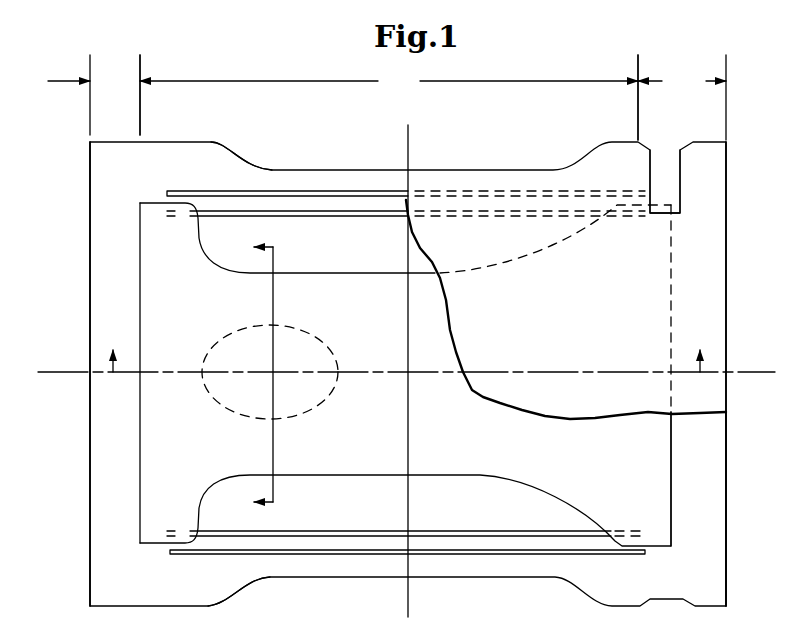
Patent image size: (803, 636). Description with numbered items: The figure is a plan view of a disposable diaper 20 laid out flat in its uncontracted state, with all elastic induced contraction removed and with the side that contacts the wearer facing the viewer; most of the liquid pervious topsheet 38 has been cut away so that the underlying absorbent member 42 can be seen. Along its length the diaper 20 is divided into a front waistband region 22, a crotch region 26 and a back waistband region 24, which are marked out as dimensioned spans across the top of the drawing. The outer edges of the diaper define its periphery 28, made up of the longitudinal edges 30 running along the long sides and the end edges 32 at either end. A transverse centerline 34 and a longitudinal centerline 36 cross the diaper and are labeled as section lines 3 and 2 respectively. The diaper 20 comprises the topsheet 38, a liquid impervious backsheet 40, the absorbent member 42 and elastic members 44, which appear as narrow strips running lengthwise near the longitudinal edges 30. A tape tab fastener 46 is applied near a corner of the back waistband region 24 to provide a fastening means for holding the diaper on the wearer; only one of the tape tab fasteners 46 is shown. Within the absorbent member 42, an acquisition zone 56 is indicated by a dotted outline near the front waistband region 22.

The diaper 20 is at (78, 268).
The front waistband region 22 is at (94, 95).
The back waistband region 24 is at (682, 97).
The crotch region 26 is at (389, 97).
The periphery 28 is at (90, 548).
The longitudinal edges 30 is at (244, 161).
The end edges 32 is at (90, 458).
The transverse centerline 34 is at (410, 152).
The longitudinal centerline 36 is at (748, 372).
The topsheet 38 is at (568, 323).
The backsheet 40 is at (708, 459).
The absorbent member 42 is at (370, 441).
The elastic members 44 is at (305, 211).
The tape tab fasteners 46 is at (666, 163).
The acquisition zone 56 is at (253, 362).
The section line 2- 2 is at (406, 348).
The section line 3- 3 is at (252, 376).